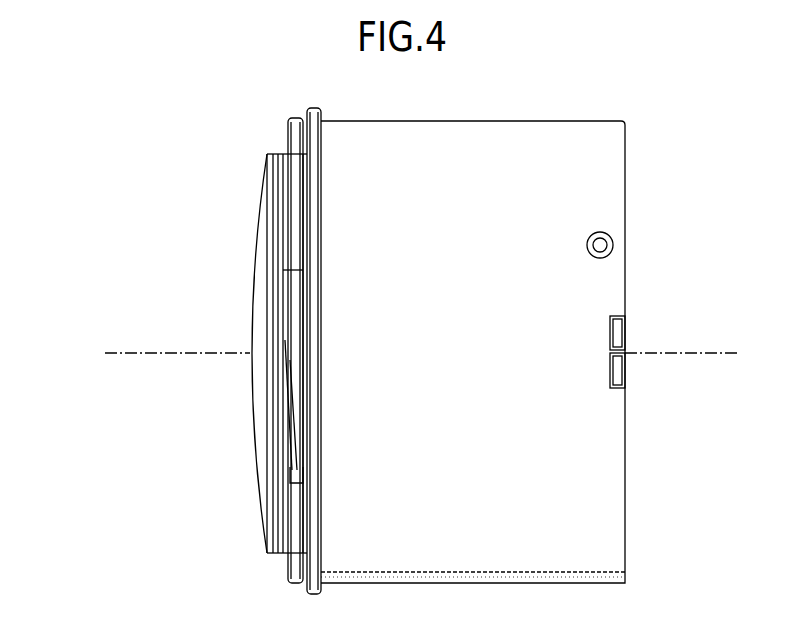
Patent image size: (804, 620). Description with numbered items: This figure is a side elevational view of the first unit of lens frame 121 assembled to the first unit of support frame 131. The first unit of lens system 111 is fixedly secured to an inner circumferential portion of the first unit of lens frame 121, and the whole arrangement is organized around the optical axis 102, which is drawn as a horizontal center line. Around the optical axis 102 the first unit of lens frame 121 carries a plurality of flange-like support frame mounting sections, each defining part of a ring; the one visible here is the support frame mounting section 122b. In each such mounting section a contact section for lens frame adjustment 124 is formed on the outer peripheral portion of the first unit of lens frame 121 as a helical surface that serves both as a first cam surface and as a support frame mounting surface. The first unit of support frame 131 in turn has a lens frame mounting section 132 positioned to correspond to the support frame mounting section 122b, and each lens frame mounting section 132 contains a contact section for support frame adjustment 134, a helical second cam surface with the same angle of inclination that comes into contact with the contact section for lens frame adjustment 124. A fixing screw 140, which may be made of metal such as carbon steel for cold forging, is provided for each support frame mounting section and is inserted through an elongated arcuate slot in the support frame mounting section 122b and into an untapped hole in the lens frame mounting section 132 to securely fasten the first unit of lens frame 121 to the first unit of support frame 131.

The optical axis 102 is at (110, 351).
The first unit of lens system 111 is at (252, 321).
The first unit of lens frame 121 is at (297, 203).
The support frame mounting section 122b is at (297, 480).
The contact section for lens frame adjustment 124 is at (292, 420).
The first unit of support frame 131 is at (545, 158).
The lens frame mounting section 132 is at (297, 292).
The contact section for support frame adjustment 134 is at (295, 328).
The fixing screw 140 is at (293, 358).